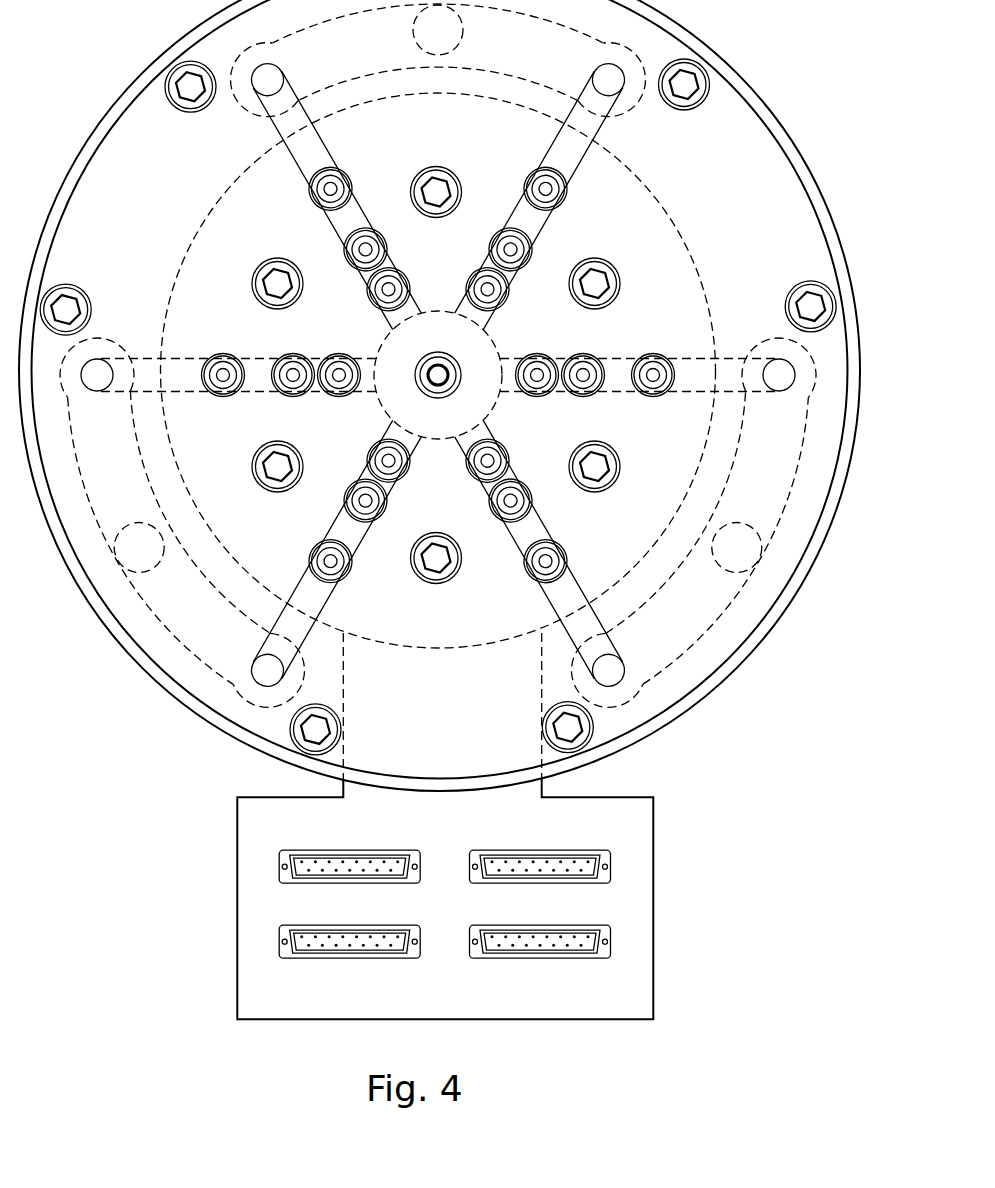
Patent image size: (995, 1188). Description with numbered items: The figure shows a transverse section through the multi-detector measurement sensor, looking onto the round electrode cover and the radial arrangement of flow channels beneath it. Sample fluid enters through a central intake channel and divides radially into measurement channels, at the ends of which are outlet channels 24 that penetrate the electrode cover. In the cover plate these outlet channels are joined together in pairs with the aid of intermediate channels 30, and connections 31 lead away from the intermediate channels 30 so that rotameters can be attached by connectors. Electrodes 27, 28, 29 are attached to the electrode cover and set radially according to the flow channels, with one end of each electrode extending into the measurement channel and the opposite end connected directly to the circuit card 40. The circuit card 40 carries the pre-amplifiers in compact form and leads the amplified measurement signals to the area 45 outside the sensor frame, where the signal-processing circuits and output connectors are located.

The outlet channel 24 is at (777, 368).
The electrode 27 is at (378, 452).
The electrode 28 is at (347, 494).
The electrode 29 is at (312, 554).
The intermediate channel 30 is at (707, 538).
The connection 31 is at (713, 560).
The circuit card 40 is at (172, 887).
The area outside the sensor frame 45 is at (578, 862).